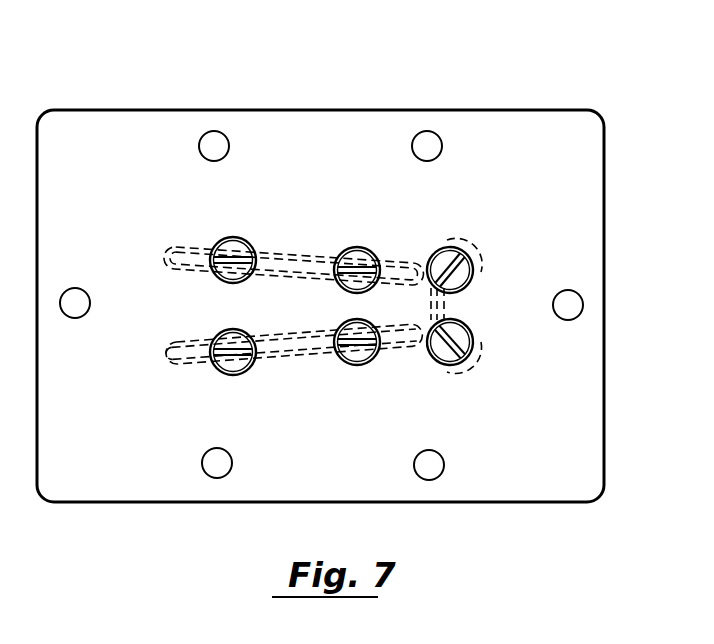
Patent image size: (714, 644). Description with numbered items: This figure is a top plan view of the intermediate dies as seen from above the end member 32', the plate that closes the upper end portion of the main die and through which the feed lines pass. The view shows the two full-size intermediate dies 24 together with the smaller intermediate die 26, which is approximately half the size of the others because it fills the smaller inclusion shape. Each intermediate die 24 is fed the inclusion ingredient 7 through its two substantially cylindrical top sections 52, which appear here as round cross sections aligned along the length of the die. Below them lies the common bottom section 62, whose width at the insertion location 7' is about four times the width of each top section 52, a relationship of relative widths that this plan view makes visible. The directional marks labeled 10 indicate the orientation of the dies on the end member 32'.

The inclusion ingredient 7 is at (294, 318).
The insertion location 7' is at (294, 377).
The fastener / screw 10 is at (212, 305).
The intermediate die 24 is at (306, 222).
The intermediate die 26 is at (507, 269).
The end member 32' is at (320, 264).
The top sections 52 is at (222, 373).
The bottom section 62 is at (183, 343).